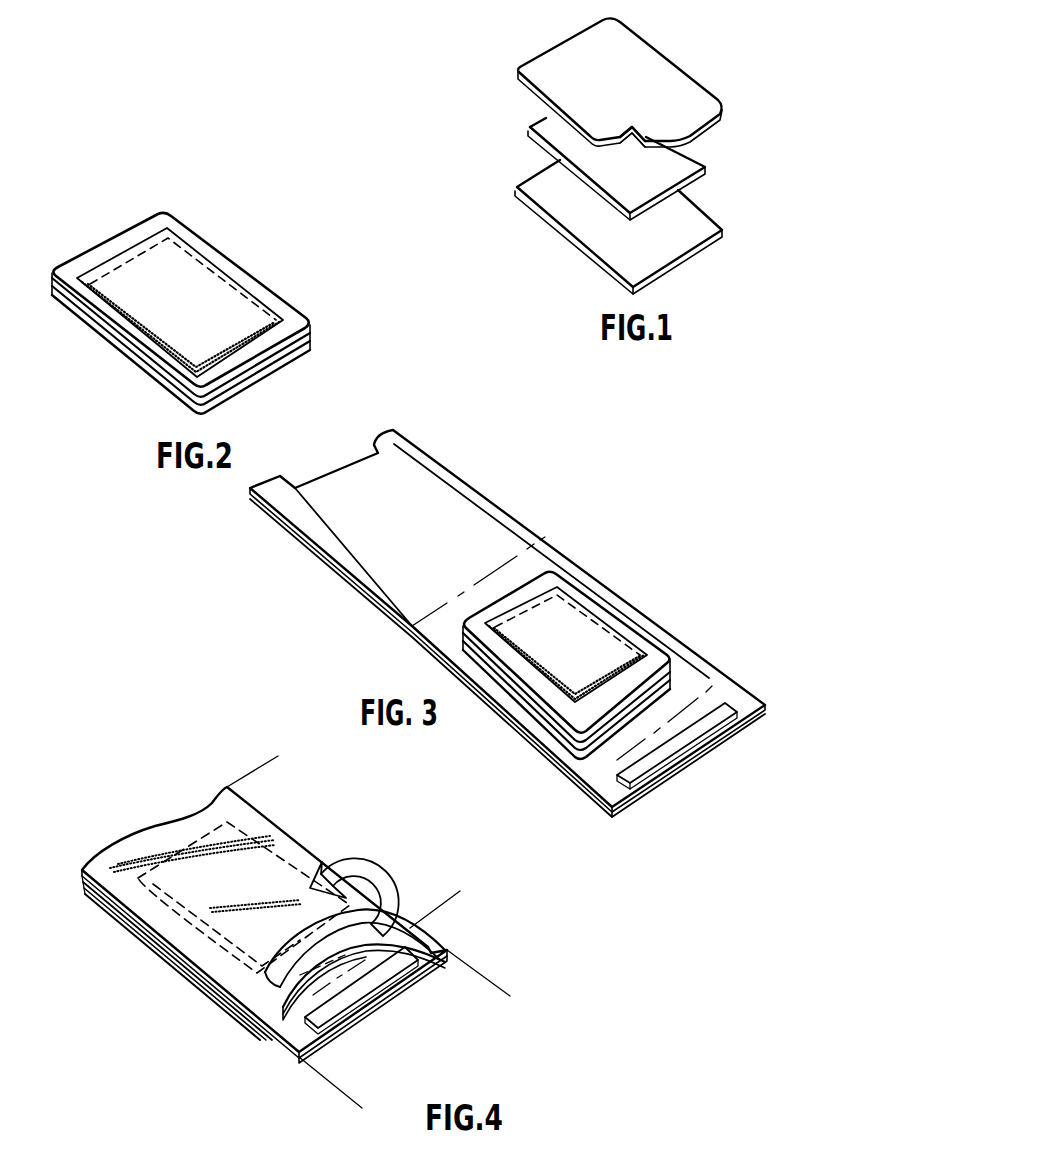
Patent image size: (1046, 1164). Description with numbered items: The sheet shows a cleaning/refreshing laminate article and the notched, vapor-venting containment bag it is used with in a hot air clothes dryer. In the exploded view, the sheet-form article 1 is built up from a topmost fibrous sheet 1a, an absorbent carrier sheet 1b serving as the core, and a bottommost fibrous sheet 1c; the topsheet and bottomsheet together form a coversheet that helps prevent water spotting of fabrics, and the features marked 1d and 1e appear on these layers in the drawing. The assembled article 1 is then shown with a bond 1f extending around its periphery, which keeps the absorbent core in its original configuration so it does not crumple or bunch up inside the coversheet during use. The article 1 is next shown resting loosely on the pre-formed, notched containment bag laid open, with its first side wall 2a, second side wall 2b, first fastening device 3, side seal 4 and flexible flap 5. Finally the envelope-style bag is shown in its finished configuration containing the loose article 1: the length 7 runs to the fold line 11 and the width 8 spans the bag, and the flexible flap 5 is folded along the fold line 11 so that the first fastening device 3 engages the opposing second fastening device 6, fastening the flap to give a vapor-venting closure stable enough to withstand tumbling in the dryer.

In FIG. 1, the sheet-form article 1 is at (540, 45).
In FIG. 2, the sheet-form article 1 is at (256, 253).
In FIG. 3, the sheet-form article 1 is at (586, 603).
In FIG. 1, the topmost fibrous sheet 1a is at (632, 57).
In FIG. 1, the absorbent carrier sheet 1b is at (686, 161).
In FIG. 2, the absorbent carrier sheet 1b is at (158, 275).
In FIG. 1, the bottommost fibrous sheet 1c is at (696, 223).
In FIG. 1, the notch in upper plate 1d is at (640, 130).
In FIG. 1, the notch region / edge of intermediate plate 1e is at (631, 142).
In FIG. 2, the bond 1f is at (130, 238).
In FIG. 3, the first side wall 2a is at (641, 611).
In FIG. 3, the second side wall 2b is at (448, 492).
In FIG. 3, the first fastening device 3 is at (650, 765).
In FIG. 3, the side seal 4 is at (669, 636).
In FIG. 3, the flexible flap 5 is at (584, 795).
In FIG. 4, the flexible flap 5 is at (269, 1038).
In FIG. 4, the second fastening device 6 is at (258, 993).
In FIG. 4, the length 7 is at (275, 758).
In FIG. 4, the width 8 is at (505, 992).
In FIG. 3, the fold line 11 is at (708, 688).
In FIG. 4, the fold line 11 is at (345, 970).